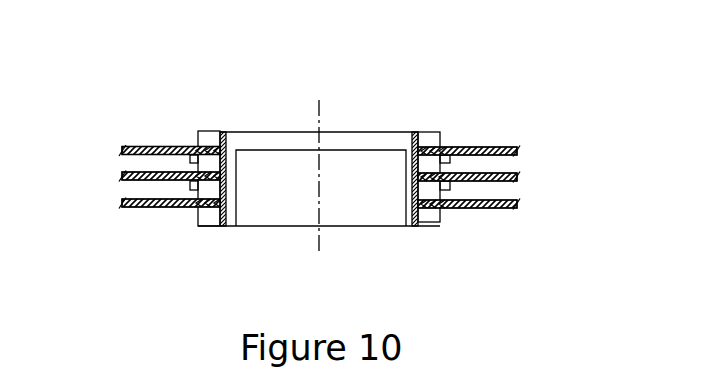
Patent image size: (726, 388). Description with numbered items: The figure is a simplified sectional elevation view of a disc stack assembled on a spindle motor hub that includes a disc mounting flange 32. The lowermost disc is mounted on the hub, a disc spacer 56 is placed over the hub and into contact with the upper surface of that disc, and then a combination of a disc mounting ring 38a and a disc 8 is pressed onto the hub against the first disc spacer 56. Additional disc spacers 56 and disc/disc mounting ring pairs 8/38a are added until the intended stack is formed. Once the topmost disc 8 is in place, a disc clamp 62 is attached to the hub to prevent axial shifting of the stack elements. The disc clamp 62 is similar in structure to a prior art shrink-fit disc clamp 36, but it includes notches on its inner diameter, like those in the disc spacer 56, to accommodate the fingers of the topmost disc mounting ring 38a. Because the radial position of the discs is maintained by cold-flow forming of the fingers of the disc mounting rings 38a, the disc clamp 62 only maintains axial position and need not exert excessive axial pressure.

The disc 8 is at (153, 147).
The prior art shrink-fit disc clamp 36 is at (266, 142).
The disc clamp 62 is at (433, 142).
The disc spacer 56 is at (432, 170).
The disc mounting ring 38a is at (193, 210).
The disc mounting flange 32 is at (420, 220).